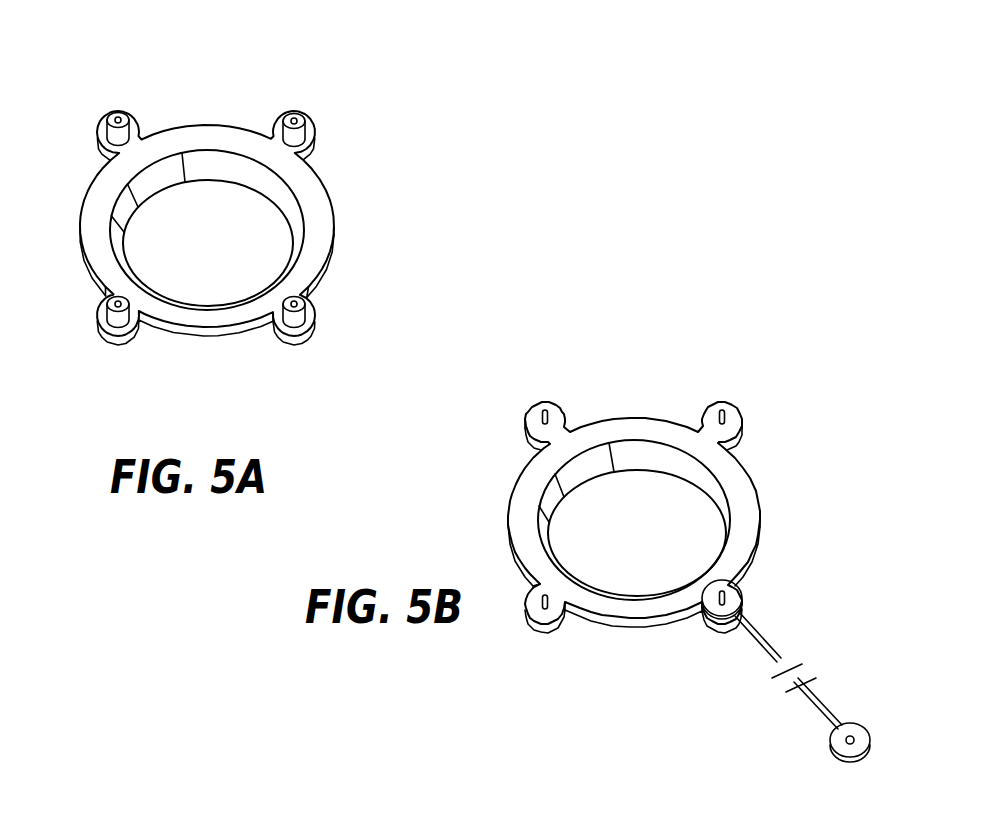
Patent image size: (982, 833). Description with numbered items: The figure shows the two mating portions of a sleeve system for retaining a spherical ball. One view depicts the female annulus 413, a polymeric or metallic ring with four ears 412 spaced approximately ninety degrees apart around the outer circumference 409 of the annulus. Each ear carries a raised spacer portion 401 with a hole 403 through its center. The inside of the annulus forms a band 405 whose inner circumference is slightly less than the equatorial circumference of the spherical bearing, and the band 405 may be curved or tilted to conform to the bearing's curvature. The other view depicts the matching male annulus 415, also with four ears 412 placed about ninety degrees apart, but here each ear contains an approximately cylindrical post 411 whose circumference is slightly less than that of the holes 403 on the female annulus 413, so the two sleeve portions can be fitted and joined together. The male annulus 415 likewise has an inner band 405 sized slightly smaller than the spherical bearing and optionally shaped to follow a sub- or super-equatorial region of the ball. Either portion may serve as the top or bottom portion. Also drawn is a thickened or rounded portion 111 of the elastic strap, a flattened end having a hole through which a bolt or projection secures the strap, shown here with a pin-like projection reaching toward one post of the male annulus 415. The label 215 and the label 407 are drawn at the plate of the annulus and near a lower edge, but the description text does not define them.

In FIG. 5B, the thickened or rounded portion 111 is at (710, 632).
In FIG. 5B, the connector 215 is at (328, 832).
In FIG. 5A, the raised spacer portion 401 is at (305, 132).
In FIG. 5A, the hole 403 is at (295, 118).
In FIG. 5A, the band 405 is at (287, 198).
In FIG. 5B, the band 405 is at (717, 500).
In FIG. 5A, the flange plate 407 is at (197, 308).
In FIG. 5B, the flange plate 407 is at (620, 597).
In FIG. 5A, the outer circumference 409 is at (210, 130).
In FIG. 5B, the post 411 is at (527, 422).
In FIG. 5A, the ear 412 is at (100, 138).
In FIG. 5B, the ear 412 is at (572, 425).
In FIG. 5A, the female annulus 413 is at (440, 120).
In FIG. 5B, the male annulus 415 is at (744, 341).